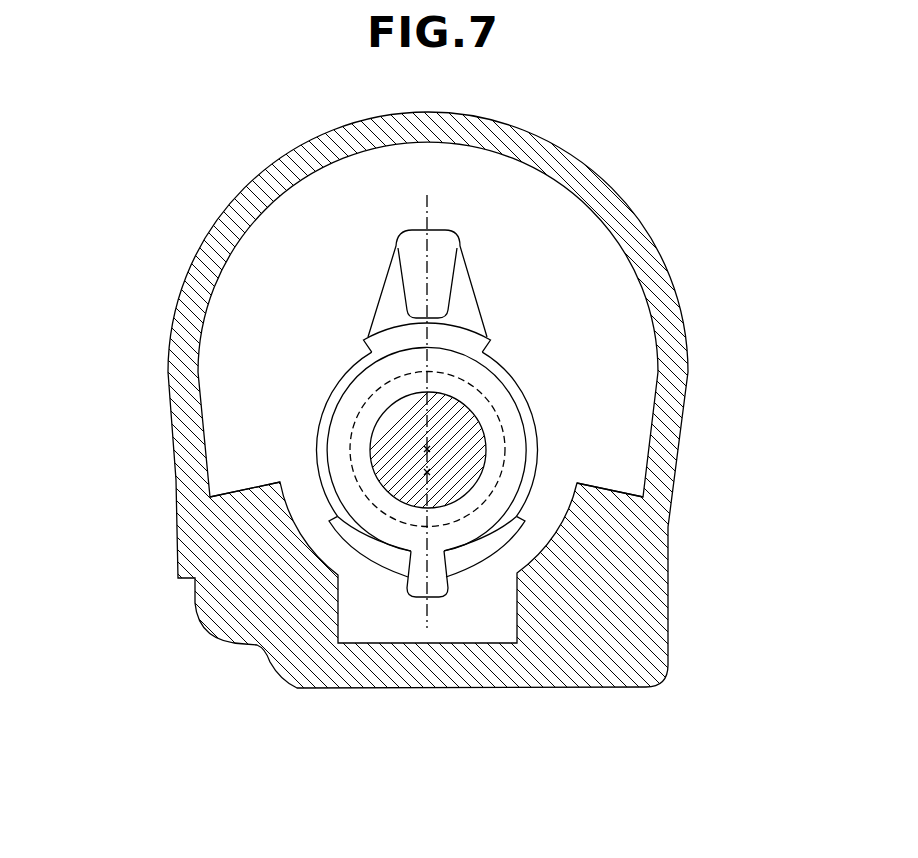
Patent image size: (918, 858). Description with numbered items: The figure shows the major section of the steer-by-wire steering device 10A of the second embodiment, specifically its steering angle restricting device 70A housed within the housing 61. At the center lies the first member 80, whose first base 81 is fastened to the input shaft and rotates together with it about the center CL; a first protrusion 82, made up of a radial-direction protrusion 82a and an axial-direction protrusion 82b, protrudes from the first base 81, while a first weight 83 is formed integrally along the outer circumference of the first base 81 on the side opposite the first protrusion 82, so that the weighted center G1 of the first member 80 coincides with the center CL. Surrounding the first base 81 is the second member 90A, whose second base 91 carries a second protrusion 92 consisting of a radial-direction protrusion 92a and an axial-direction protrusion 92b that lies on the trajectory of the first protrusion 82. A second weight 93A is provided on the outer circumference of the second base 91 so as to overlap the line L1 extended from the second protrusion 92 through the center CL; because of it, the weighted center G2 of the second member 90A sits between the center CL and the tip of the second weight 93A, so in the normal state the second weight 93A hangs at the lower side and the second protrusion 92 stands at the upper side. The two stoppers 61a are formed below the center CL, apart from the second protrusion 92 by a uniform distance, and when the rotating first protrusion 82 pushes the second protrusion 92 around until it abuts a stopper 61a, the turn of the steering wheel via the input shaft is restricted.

The steering device 10A is at (176, 90).
The housing 61 is at (284, 172).
The stoppers 61a is at (242, 487).
The steering angle restricting device 70A is at (330, 320).
The first member 80 is at (541, 453).
The first base 81 is at (478, 390).
The first protrusion 82 is at (580, 749).
The radial-direction protrusion of first protrusion 82a is at (505, 548).
The axial-direction protrusion of first protrusion 82b is at (440, 584).
The first weight 83 is at (467, 345).
The second member 90A is at (332, 378).
The second base 91 is at (320, 424).
The second protrusion 92 is at (317, 263).
The radial-direction protrusion 92a is at (395, 300).
The axial-direction protrusion 92b is at (415, 245).
The second weight 93A is at (375, 562).
The center of the input shaft CL is at (430, 450).
The weighted center of the first member G1 is at (530, 409).
The weighted center of the second member G2 is at (427, 472).
The line L1 is at (426, 618).